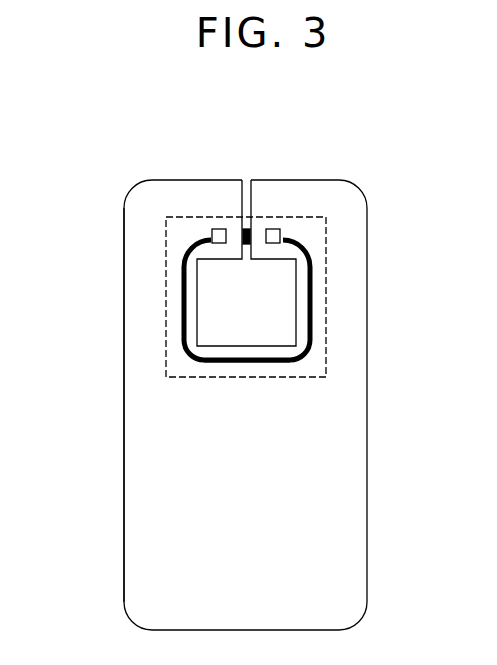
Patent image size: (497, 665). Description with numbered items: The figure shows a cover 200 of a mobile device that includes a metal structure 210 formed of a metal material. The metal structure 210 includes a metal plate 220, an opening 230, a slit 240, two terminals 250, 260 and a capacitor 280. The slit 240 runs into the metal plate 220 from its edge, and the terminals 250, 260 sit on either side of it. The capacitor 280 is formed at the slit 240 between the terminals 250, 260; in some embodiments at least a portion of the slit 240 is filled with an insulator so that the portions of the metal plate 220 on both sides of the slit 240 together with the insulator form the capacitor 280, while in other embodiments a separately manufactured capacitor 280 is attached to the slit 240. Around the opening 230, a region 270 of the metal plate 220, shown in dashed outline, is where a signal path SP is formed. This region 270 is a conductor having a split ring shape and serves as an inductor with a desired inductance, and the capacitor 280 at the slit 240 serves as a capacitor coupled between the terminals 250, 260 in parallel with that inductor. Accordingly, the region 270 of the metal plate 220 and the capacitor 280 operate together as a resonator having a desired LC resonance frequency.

The cover 200 is at (230, 116).
The metal structure 210 is at (362, 191).
The metal plate 220 is at (124, 298).
The opening 230 is at (266, 300).
The slit 240 is at (252, 200).
The terminal 250 is at (214, 229).
The terminal 260 is at (278, 229).
The region 270 is at (326, 268).
The capacitor 280 is at (244, 228).
The signal path SP is at (238, 365).